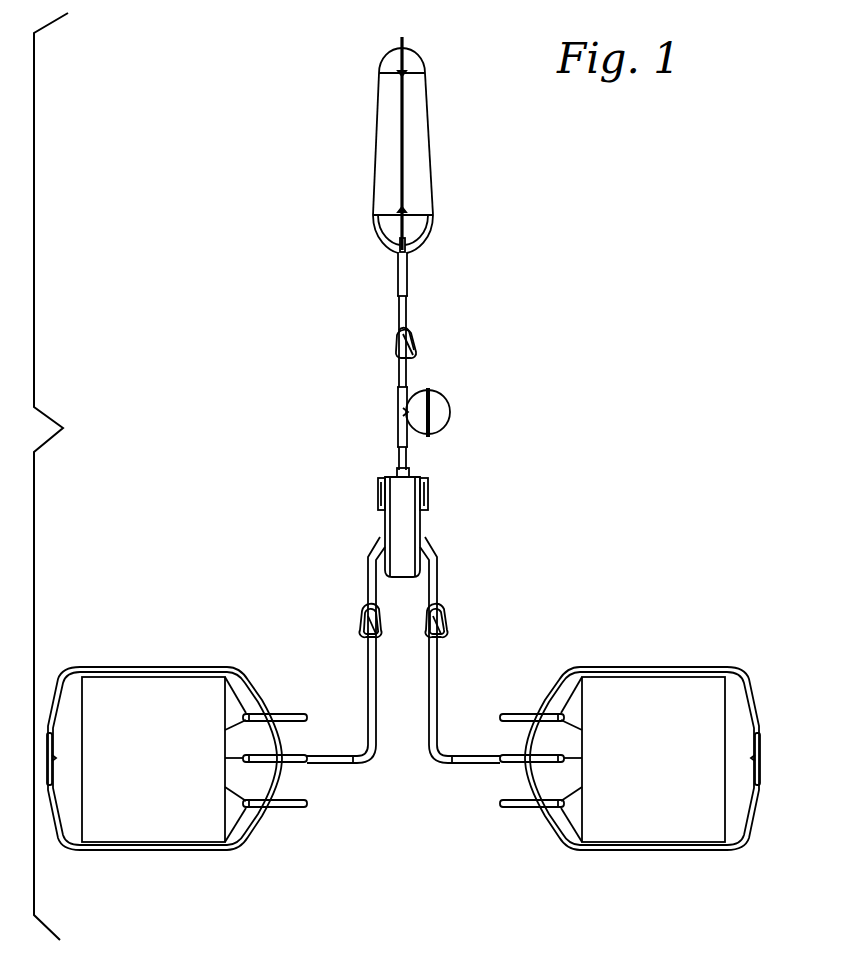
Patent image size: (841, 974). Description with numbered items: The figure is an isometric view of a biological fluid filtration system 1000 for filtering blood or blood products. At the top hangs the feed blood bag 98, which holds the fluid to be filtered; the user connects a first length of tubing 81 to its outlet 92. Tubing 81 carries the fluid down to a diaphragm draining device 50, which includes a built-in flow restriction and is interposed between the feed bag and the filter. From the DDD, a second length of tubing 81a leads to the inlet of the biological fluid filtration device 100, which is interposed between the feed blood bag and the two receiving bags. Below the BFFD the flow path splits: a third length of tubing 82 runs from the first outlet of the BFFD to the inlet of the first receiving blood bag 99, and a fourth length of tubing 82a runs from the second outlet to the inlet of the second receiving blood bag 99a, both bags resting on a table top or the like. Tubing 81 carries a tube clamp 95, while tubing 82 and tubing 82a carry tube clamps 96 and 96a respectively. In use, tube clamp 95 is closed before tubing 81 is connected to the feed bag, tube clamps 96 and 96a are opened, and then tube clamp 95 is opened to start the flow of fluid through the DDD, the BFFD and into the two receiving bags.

The biological fluid filtration system 1000 is at (79, 476).
The feed blood bag 98 is at (388, 99).
The outlet 92 is at (404, 268).
The tube clamp 95 is at (399, 330).
The first length of tubing 81 is at (398, 366).
The diaphragm draining device 50 is at (457, 392).
The second length of tubing 81a is at (392, 470).
The biological fluid filtration device 100 is at (375, 527).
The tube clamp 96 is at (366, 634).
The tube clamp 96a is at (446, 637).
The third length of tubing 82 is at (372, 712).
The fourth length of tubing 82a is at (433, 703).
The first receiving blood bag 99 is at (128, 815).
The second receiving blood bag 99a is at (638, 823).